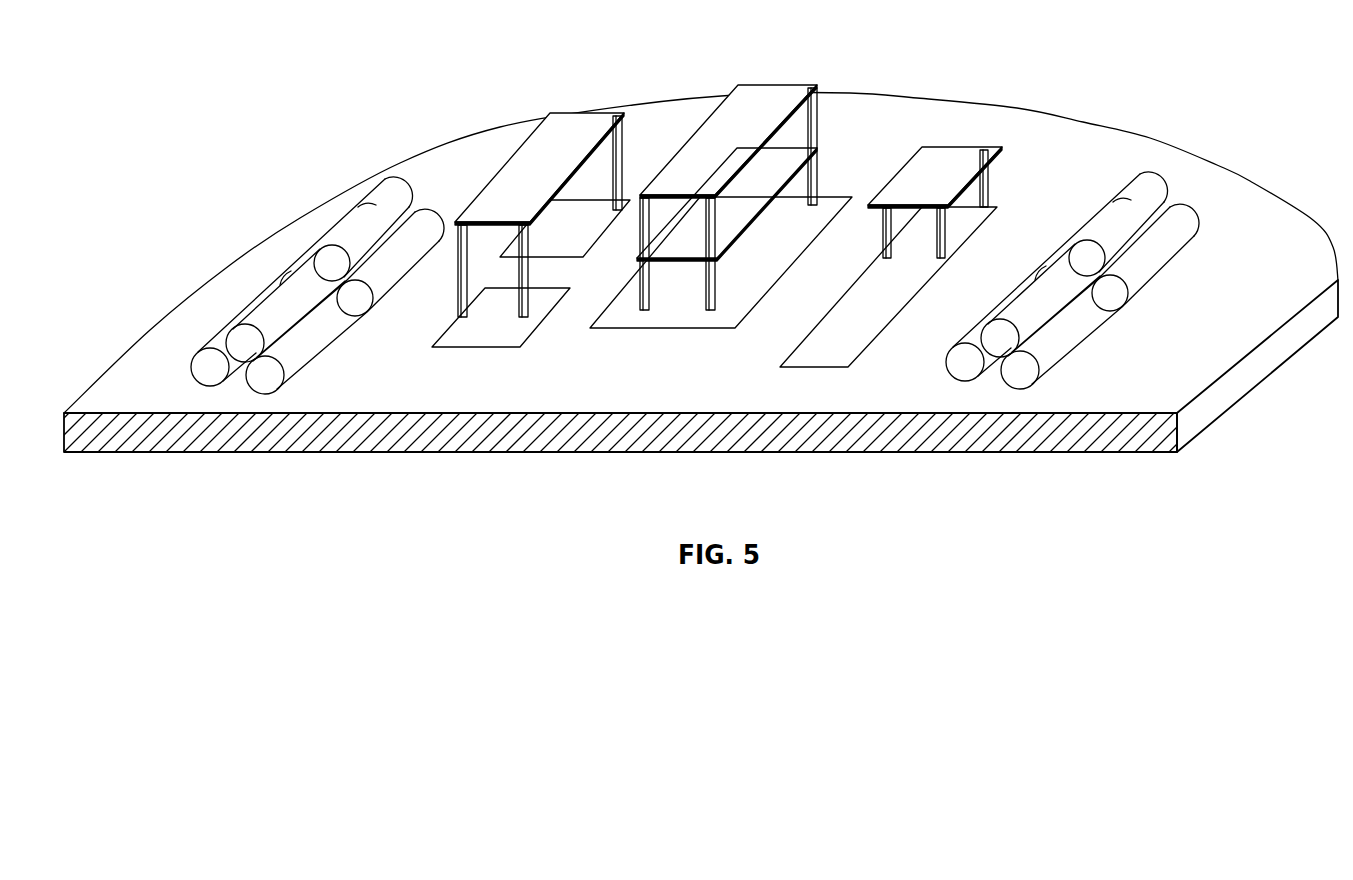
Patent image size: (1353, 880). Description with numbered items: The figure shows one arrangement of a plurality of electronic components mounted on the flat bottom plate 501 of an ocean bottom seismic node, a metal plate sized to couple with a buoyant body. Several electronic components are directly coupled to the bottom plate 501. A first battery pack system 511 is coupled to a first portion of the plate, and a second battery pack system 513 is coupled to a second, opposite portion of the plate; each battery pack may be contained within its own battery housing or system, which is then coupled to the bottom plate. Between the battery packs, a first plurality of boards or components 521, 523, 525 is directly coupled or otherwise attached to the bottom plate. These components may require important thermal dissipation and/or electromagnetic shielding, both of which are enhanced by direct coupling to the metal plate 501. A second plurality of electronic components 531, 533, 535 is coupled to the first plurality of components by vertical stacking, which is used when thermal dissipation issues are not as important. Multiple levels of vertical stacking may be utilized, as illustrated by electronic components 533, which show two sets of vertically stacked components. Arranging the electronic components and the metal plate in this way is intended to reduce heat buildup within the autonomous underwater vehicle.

The flat bottom plate 501 is at (1073, 438).
The first battery pack system 511 is at (292, 360).
The second battery pack system 513 is at (1047, 355).
The first plurality of boards/components 521 is at (513, 330).
The first plurality of boards/components 523 is at (772, 252).
The first plurality of boards/components 525 is at (850, 348).
The second plurality of electronic components 531 is at (555, 124).
The second plurality of electronic components 533 is at (748, 88).
The second plurality of electronic components 535 is at (952, 150).